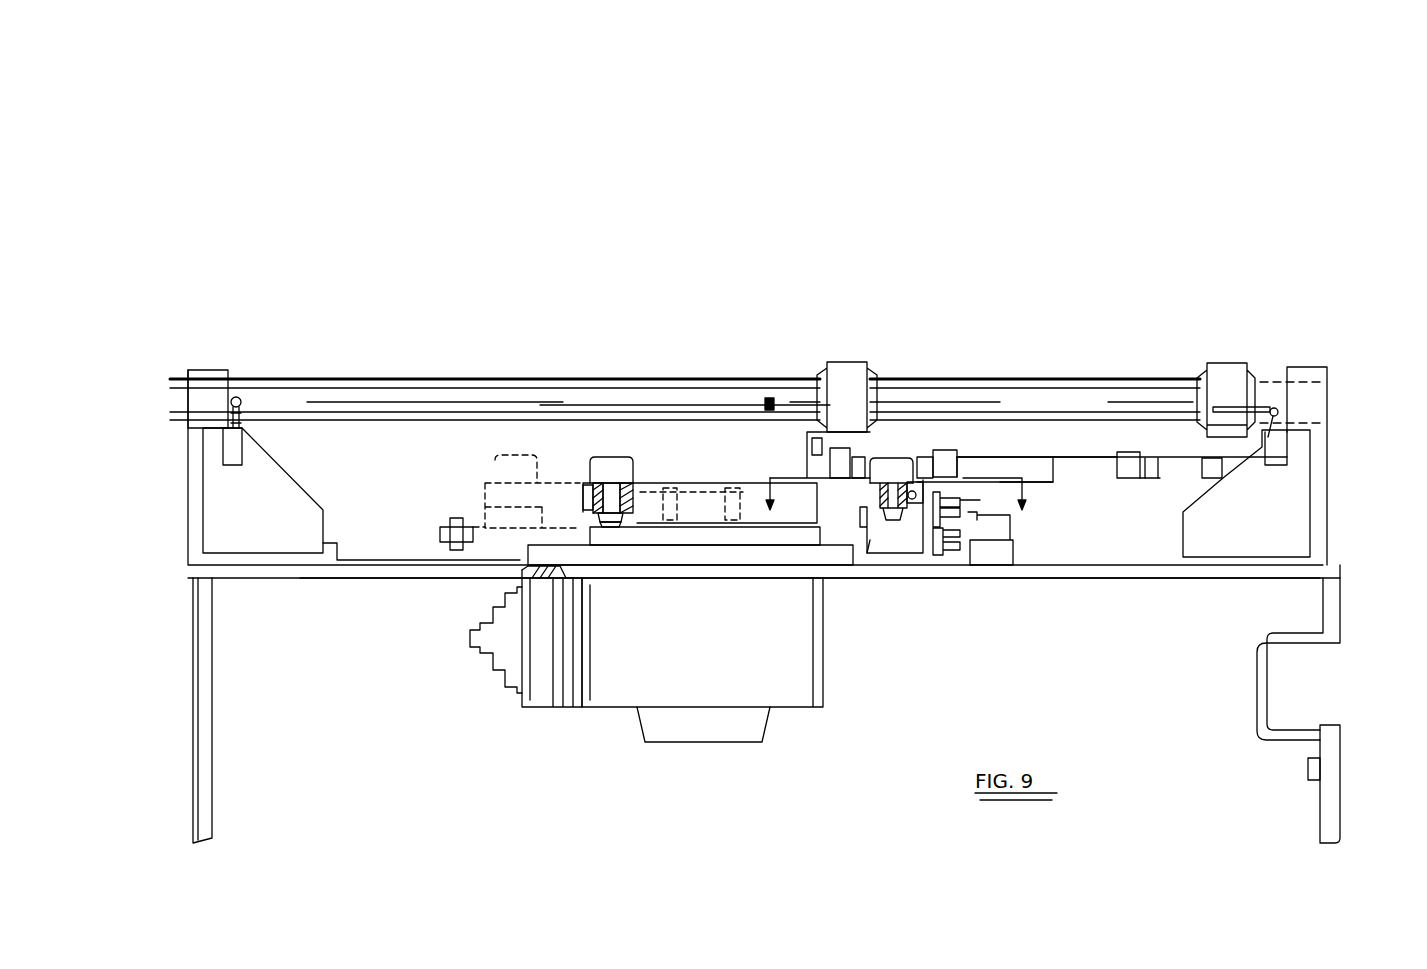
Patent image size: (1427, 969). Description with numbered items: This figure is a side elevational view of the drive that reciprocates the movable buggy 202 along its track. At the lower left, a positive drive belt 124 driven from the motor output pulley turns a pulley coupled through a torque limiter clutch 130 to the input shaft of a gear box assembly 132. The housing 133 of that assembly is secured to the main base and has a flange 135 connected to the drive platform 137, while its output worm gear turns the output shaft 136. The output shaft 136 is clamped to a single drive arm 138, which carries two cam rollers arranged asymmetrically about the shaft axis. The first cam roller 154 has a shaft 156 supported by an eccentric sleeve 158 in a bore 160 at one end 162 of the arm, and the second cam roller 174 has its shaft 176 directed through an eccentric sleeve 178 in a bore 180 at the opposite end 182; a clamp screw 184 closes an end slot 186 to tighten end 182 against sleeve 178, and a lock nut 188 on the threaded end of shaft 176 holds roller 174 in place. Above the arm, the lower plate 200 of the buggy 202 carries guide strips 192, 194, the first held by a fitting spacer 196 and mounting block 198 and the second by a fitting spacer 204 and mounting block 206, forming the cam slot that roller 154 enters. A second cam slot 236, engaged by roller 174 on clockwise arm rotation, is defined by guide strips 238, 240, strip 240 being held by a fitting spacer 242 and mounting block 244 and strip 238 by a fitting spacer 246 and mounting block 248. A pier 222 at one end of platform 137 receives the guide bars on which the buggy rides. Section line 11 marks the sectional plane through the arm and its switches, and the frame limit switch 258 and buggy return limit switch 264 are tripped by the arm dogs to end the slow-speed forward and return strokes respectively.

The section line 11- 11 is at (910, 495).
The positive drive belt 124 is at (537, 705).
The torque limiter clutch 130 is at (490, 673).
The gear box assembly 132 is at (603, 716).
The housing 133 is at (778, 695).
The flange 135 is at (540, 553).
The output shaft 136 is at (700, 547).
The drive platform 137 is at (1000, 578).
The drive arm 138 is at (647, 482).
The first cam roller 154 is at (925, 470).
The shaft 156 is at (950, 465).
The eccentric sleeve 158 is at (868, 520).
The bore 160 is at (885, 475).
The end of drive arm 162 is at (912, 500).
The second cam roller 174 is at (617, 492).
The shaft 176 is at (587, 513).
The eccentric sleeve 178 is at (607, 481).
The bore 180 is at (645, 490).
The opposite end of drive arm 182 is at (658, 493).
The clamp screw 184 is at (578, 497).
The end slot 186 is at (591, 484).
The lock nut 188 is at (630, 527).
The guide strip 192 is at (1000, 457).
The guide strip 194 is at (895, 493).
The fitting spacer 196 is at (958, 465).
The mounting block 198 is at (1040, 457).
The lower plate 200 is at (1052, 458).
The movable buggy 202 is at (1086, 430).
The fitting spacer 204 is at (850, 480).
The mounting block 206 is at (840, 460).
The pier 222 is at (210, 377).
The cam slot 236 is at (1150, 472).
The guide strip 238 is at (1127, 470).
The guide strip 240 is at (1213, 480).
The fitting spacer 242 is at (1225, 480).
The mounting block 244 is at (1233, 458).
The fitting spacer 246 is at (1125, 468).
The mounting block 248 is at (1160, 455).
The frame limit switch 258 is at (237, 434).
The buggy return limit switch 264 is at (1268, 437).